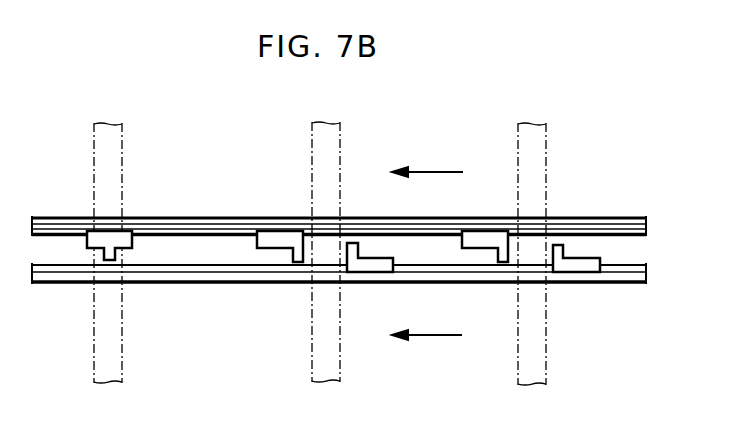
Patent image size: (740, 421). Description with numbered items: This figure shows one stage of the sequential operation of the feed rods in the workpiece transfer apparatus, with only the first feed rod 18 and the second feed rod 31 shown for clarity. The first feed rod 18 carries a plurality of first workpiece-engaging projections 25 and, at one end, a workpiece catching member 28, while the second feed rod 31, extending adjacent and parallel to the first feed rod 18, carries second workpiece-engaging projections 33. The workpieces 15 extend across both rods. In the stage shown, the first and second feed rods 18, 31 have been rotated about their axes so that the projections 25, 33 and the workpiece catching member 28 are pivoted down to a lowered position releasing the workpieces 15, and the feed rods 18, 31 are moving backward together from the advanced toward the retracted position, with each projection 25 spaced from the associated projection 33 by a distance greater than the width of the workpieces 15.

The workpiece 15 is at (115, 146).
The first feed rod 18 is at (204, 222).
The second feed rod 31 is at (200, 285).
The workpiece catching member 28 is at (112, 238).
The first workpiece-engaging projection 25 is at (280, 232).
The second workpiece-engaging projection 33 is at (378, 266).